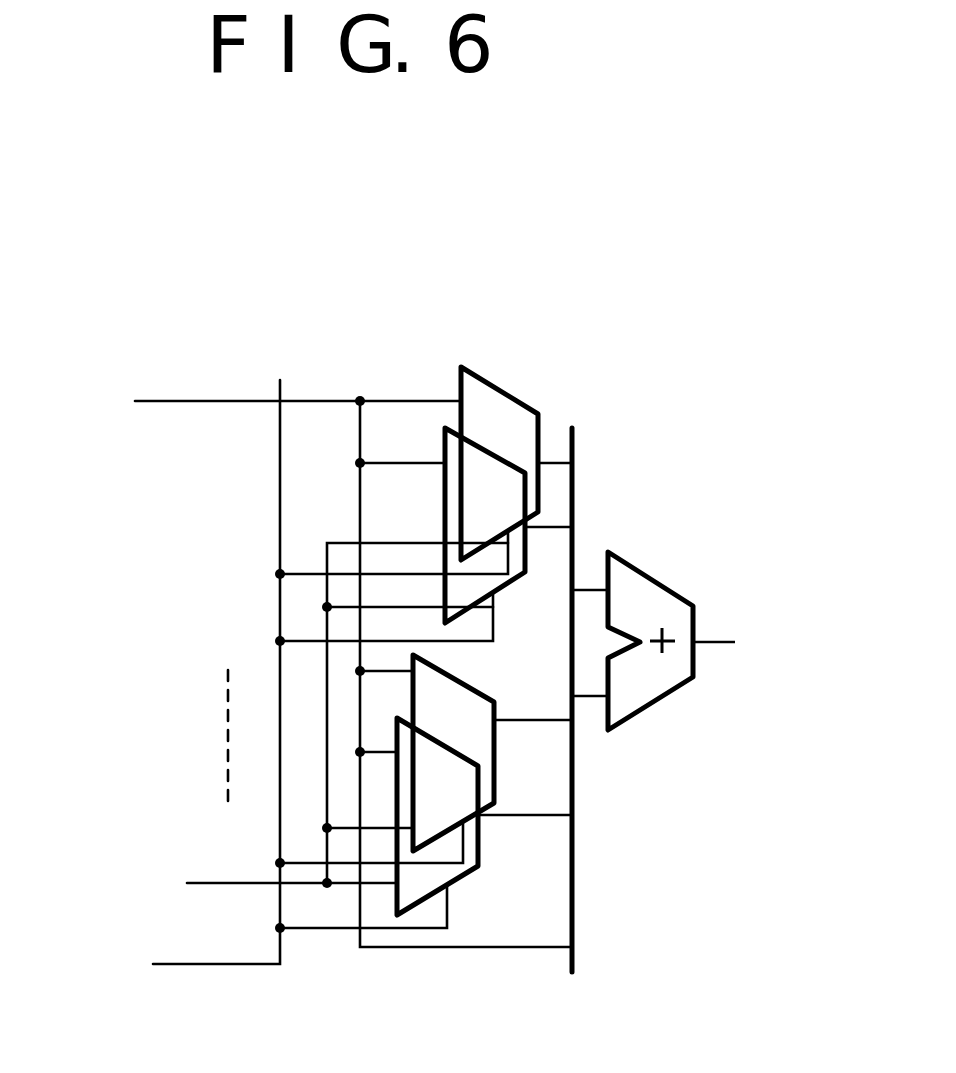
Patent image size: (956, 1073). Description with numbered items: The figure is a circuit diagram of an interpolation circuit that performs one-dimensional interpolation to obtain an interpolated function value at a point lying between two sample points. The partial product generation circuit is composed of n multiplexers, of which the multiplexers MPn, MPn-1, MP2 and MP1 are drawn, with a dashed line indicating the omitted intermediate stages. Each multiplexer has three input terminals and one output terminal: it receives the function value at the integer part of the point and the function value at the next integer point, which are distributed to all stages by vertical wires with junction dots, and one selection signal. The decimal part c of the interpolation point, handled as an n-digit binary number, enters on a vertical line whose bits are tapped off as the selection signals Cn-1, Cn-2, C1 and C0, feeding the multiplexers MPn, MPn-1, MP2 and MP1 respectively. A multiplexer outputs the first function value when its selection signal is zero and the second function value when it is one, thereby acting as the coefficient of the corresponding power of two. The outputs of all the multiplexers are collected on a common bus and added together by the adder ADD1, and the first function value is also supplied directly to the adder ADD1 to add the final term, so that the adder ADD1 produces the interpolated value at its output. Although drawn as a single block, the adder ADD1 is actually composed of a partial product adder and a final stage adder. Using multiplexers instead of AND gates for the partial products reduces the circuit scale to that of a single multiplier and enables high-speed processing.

The multiplexer MPn is at (512, 398).
The multiplexer MPn-1 is at (445, 513).
The multiplexer MP2 is at (413, 697).
The multiplexer MP1 is at (397, 800).
The adder ADD1 is at (663, 695).
The selection signal Cn-1 is at (332, 566).
The selection signal Cn-2 is at (331, 628).
The selection signal C1 is at (338, 851).
The selection signal C0 is at (330, 918).
The decimal part c is at (200, 681).